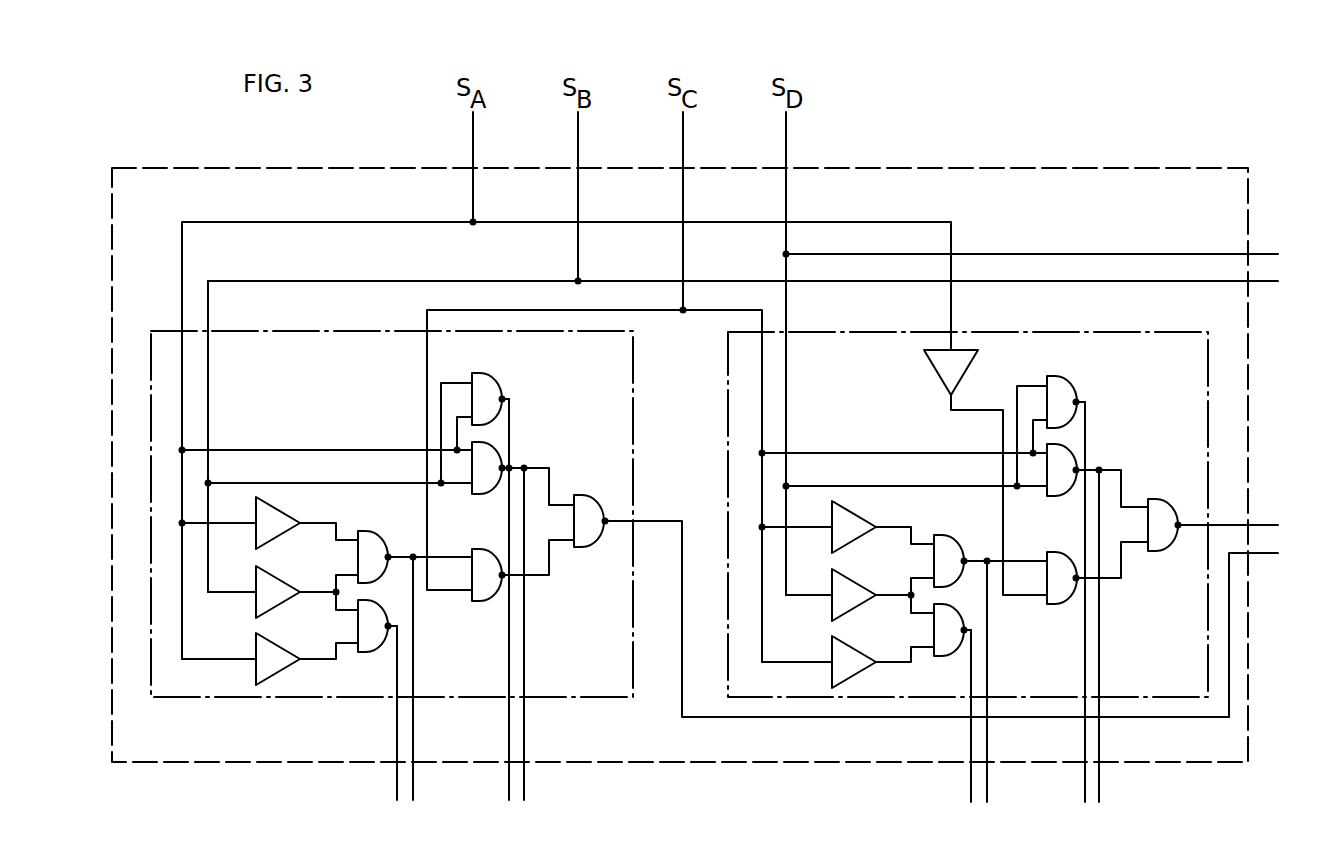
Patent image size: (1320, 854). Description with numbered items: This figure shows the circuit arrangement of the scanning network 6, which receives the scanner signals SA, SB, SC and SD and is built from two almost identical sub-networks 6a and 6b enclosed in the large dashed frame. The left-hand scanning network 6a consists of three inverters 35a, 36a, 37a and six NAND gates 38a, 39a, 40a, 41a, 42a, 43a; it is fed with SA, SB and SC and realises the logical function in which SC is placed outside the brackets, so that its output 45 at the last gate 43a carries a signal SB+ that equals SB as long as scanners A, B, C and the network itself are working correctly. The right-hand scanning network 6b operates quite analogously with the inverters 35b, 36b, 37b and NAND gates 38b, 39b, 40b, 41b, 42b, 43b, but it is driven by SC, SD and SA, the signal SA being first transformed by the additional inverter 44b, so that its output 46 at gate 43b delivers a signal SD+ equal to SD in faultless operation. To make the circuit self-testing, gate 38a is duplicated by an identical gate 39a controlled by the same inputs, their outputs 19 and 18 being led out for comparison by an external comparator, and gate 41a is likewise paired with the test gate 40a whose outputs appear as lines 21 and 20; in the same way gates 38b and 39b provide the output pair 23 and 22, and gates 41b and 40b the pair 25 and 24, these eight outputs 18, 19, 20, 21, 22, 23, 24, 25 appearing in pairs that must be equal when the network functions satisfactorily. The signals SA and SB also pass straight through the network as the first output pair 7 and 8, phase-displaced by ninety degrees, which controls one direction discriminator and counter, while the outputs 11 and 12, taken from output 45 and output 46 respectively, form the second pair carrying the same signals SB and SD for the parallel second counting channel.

The scanning network 6 is at (736, 778).
The scanning network 6a is at (283, 328).
The scanning network 6b is at (1047, 328).
The output signal 7 is at (1266, 286).
The output signal 8 is at (1264, 254).
The output 11 is at (1264, 556).
The output 12 is at (1262, 524).
The output signal 18 is at (397, 782).
The output signal 19 is at (419, 796).
The output 20 is at (502, 777).
The output 21 is at (536, 792).
The output signal 22 is at (968, 784).
The output signal 23 is at (990, 792).
The output 24 is at (1080, 772).
The output 25 is at (1102, 790).
The inverter 35a is at (272, 527).
The inverter 36a is at (272, 588).
The inverter 37a is at (274, 658).
The NAND gate 38a is at (370, 554).
The NAND gate 39a is at (368, 648).
The NAND gate 40a is at (488, 392).
The NAND gate 41a is at (502, 462).
The NAND gate 42a is at (480, 562).
The NAND gate 43a is at (586, 540).
The output 45 is at (648, 530).
The inverter 35b is at (848, 531).
The inverter 36b is at (846, 592).
The inverter 37b is at (843, 661).
The NAND gate 38b is at (948, 558).
The NAND gate 39b is at (944, 650).
The NAND gate 40b is at (1058, 391).
The NAND gate 41b is at (1077, 464).
The NAND gate 42b is at (1056, 566).
The NAND gate 43b is at (1160, 544).
The inverter 44b is at (942, 362).
The output 46 is at (1218, 522).